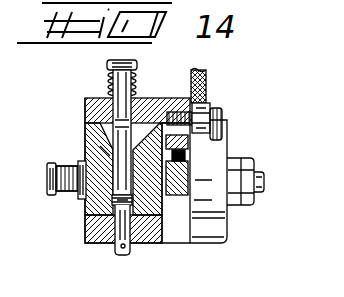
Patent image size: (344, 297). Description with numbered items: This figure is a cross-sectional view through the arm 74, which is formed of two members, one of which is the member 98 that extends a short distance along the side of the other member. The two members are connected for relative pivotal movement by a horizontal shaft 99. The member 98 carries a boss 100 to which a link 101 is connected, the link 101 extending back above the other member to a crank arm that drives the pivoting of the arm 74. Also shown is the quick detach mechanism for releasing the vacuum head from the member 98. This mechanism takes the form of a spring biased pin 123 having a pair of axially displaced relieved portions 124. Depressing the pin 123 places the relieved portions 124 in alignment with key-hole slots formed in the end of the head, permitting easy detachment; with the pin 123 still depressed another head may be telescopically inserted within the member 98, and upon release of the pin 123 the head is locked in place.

The arm 74 is at (225, 244).
The member 98 is at (101, 228).
The horizontal shaft 99 is at (50, 162).
The boss 100 is at (200, 101).
The link 101 is at (207, 82).
The spring biased pin 123 is at (133, 254).
The relieved portions 124 is at (100, 150).